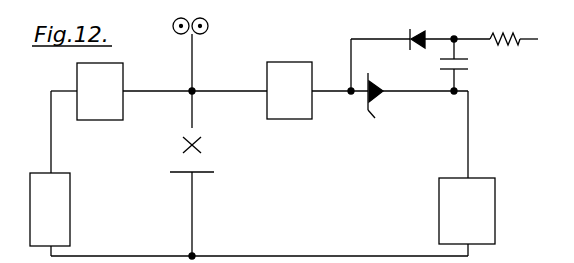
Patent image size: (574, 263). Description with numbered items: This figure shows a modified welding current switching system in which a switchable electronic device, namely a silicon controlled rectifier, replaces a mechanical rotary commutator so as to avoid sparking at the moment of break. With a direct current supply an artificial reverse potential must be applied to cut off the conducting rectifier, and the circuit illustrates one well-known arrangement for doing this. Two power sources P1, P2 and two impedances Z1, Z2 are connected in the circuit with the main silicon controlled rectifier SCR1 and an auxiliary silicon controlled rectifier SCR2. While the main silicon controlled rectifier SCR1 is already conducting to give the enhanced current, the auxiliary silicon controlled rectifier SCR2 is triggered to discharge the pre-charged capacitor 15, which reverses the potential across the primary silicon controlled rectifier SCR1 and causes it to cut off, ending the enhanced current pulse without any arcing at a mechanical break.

The capacitor 15 is at (439, 61).
The impedance Z1 is at (100, 91).
The impedance Z2 is at (289, 90).
The power source P1 is at (50, 209).
The power source P2 is at (467, 211).
The main silicon controlled rectifier SCR1 is at (395, 95).
The auxiliary silicon controlled rectifier SCR2 is at (397, 35).